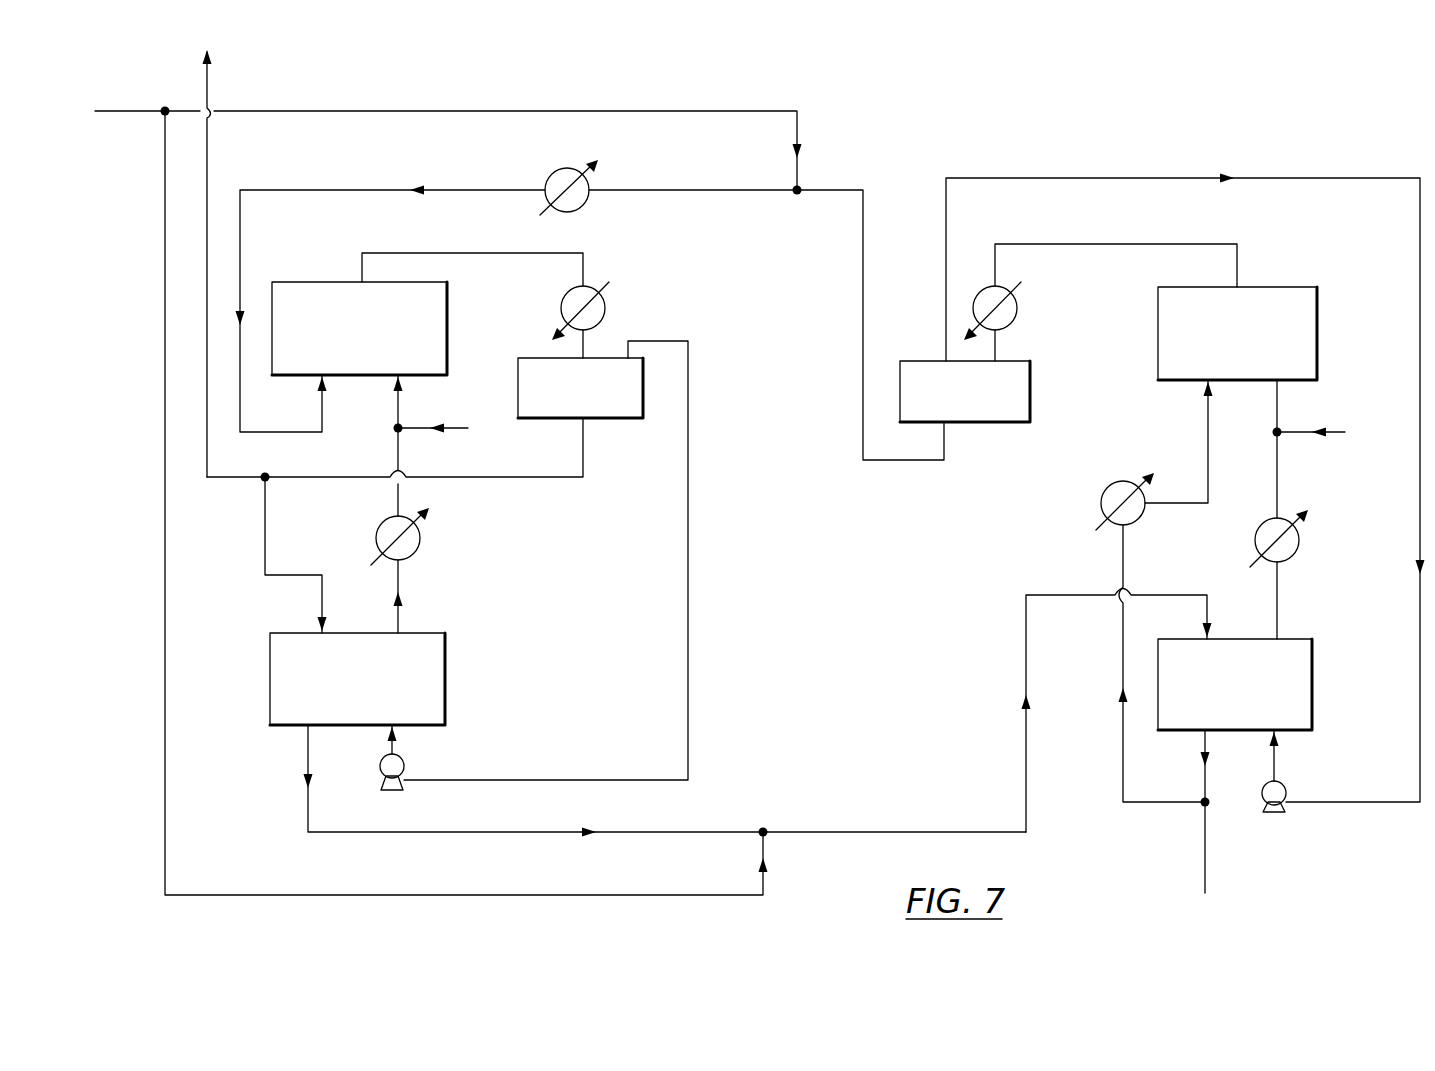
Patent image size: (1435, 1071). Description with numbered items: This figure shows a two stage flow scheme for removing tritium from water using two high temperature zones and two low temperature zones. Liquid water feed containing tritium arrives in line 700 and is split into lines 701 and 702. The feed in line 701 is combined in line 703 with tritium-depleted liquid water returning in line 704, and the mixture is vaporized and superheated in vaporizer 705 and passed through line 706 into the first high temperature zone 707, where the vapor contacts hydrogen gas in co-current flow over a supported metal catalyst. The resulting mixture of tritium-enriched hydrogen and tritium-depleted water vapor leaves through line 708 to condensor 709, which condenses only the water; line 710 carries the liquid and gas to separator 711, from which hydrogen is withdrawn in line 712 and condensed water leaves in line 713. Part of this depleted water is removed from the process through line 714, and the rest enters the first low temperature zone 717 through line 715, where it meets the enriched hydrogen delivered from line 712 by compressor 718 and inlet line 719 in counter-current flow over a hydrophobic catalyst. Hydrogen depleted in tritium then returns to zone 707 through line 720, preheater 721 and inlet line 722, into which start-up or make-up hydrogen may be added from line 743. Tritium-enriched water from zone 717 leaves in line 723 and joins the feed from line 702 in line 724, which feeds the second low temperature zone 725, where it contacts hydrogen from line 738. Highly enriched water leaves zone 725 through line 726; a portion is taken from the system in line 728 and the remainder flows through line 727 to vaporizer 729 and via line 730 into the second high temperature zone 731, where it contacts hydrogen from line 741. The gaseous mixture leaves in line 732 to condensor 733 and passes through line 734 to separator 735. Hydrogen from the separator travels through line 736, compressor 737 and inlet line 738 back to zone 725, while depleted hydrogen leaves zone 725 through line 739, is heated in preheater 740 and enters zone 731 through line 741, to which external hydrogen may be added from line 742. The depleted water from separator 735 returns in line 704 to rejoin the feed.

The line 700 is at (121, 108).
The line 701 is at (546, 110).
The line 702 is at (163, 518).
The line 703 is at (712, 189).
The line 704 is at (862, 336).
The vaporizer 705 is at (589, 202).
The line 706 is at (448, 188).
The first high temperature zone 707 is at (448, 306).
The line 708 is at (363, 252).
The condensor 709 is at (605, 297).
The line 710 is at (595, 339).
The separator 711 is at (604, 419).
The line 712 is at (690, 606).
The line 713 is at (544, 479).
The line 714 is at (208, 94).
The line 715 is at (265, 540).
The first low temperature zone 717 is at (447, 662).
The compressor 718 is at (400, 786).
The inlet line 719 is at (394, 743).
The line 720 is at (402, 604).
The preheater 721 is at (421, 540).
The inlet line 722 is at (400, 456).
The line 723 is at (645, 832).
The line 724 is at (918, 832).
The second low temperature zone 725 is at (1314, 680).
The line 726 is at (1205, 750).
The line 727 is at (1157, 803).
The line 728 is at (1207, 876).
The vaporizer 729 is at (1101, 507).
The line 730 is at (1208, 428).
The second high temperature zone 731 is at (1318, 300).
The line 732 is at (1105, 244).
The condensor 733 is at (1017, 308).
The line 734 is at (998, 354).
The separator 735 is at (1031, 400).
The line 736 is at (1275, 178).
The compressor 737 is at (1281, 810).
The inlet line 738 is at (1276, 760).
The line 739 is at (1279, 614).
The preheater 740 is at (1300, 540).
The line 741 is at (1279, 414).
The line 742 is at (1338, 432).
The line 743 is at (433, 428).